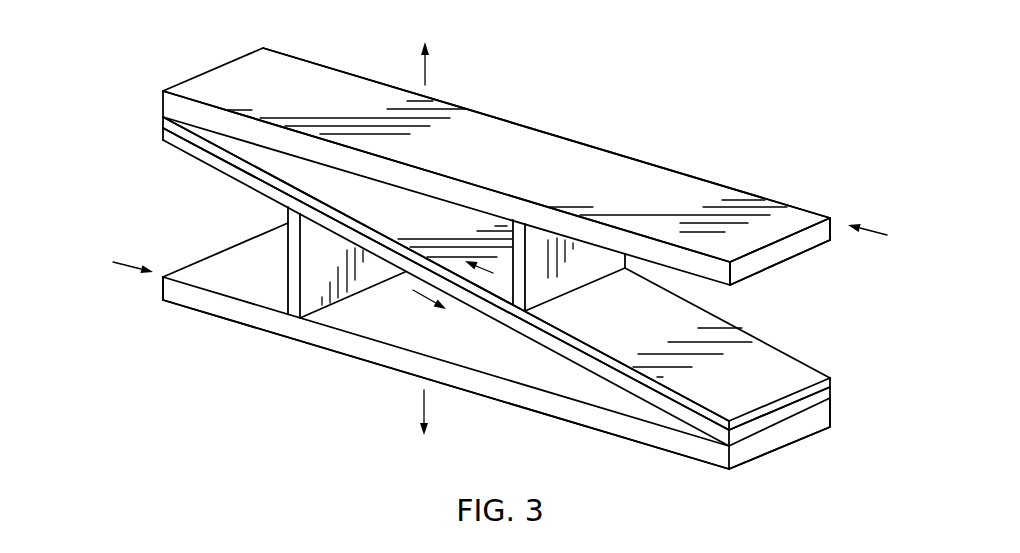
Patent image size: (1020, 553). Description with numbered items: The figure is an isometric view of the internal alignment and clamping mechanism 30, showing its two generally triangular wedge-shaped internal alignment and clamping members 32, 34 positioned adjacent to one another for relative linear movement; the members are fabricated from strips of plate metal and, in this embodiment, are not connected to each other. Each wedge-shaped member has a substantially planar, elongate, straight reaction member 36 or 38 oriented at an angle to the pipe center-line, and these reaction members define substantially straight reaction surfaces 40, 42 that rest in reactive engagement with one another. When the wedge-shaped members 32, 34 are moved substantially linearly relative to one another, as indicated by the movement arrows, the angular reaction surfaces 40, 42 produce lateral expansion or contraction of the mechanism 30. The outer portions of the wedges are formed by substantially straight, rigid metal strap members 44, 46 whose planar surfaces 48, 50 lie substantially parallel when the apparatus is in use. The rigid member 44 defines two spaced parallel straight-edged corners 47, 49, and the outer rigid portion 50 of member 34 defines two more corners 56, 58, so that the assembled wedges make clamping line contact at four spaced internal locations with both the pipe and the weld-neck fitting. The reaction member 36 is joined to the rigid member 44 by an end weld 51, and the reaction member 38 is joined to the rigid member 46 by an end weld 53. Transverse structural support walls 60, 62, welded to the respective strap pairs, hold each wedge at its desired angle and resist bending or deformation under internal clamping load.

The internal alignment and clamping mechanism 30 is at (205, 65).
The wedge-shaped internal alignment and clamping member 32 is at (831, 215).
The wedge-shaped internal alignment and clamping member 34 is at (703, 465).
The reaction member 36 is at (237, 163).
The reaction member 38 is at (572, 356).
The reaction surface 40 is at (339, 226).
The reaction surface 42 is at (405, 257).
The substantially straight rigid member 44 is at (811, 248).
The substantially straight rigid member 46 is at (163, 301).
The straight edged corner 47 is at (652, 163).
The substantially straight and planar surface 48 is at (695, 188).
The straight edged corner 49 is at (470, 182).
The substantially straight and planar surface 50 is at (780, 449).
The end weld 51 is at (163, 117).
The end weld 53 is at (800, 413).
The straight edged corner 56 is at (831, 428).
The straight edged corner 58 is at (655, 449).
The structural support wall 60 is at (530, 309).
The structural support wall 62 is at (294, 270).